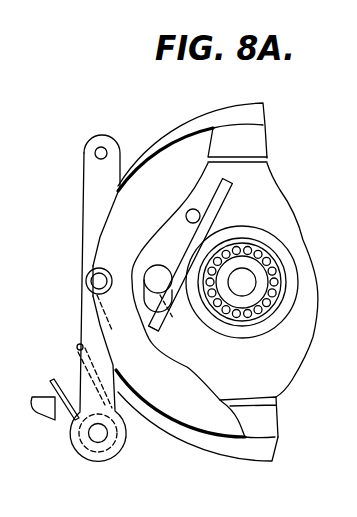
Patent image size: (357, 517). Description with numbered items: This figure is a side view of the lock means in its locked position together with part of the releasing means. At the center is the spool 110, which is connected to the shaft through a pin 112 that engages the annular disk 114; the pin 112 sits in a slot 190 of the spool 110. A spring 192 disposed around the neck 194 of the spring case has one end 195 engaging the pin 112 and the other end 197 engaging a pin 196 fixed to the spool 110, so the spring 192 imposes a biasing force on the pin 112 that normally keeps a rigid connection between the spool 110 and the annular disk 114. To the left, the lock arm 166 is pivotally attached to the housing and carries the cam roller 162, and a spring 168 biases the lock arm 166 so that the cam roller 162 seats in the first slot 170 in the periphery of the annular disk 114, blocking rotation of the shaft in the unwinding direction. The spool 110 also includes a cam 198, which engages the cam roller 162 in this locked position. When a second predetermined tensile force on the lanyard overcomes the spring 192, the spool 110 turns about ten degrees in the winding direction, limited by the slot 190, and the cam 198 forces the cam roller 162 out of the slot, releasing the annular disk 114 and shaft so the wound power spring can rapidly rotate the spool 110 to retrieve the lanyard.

The spool 110 is at (277, 199).
The pin 112 is at (156, 274).
The annular disk 114 is at (143, 217).
The cam roller 162 is at (88, 279).
The lock arm 166 is at (86, 182).
The spring 168 is at (52, 383).
The first slot 170 is at (94, 265).
The slot 190 is at (151, 311).
The spring 192 is at (230, 338).
The neck 194 is at (271, 318).
The one end 195 is at (163, 332).
The pin 196 is at (189, 210).
The other end 197 is at (229, 190).
The cam 198 is at (113, 320).